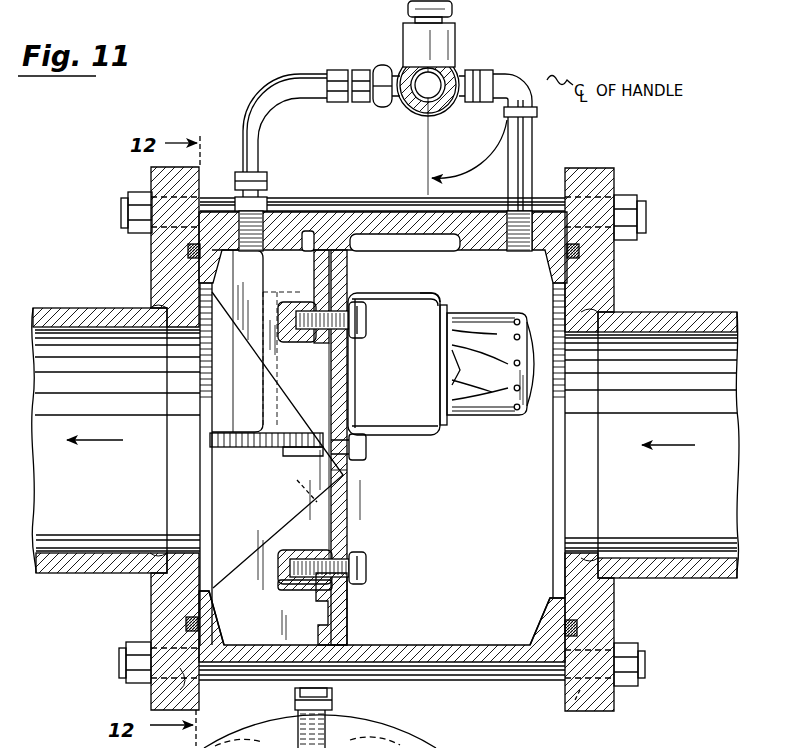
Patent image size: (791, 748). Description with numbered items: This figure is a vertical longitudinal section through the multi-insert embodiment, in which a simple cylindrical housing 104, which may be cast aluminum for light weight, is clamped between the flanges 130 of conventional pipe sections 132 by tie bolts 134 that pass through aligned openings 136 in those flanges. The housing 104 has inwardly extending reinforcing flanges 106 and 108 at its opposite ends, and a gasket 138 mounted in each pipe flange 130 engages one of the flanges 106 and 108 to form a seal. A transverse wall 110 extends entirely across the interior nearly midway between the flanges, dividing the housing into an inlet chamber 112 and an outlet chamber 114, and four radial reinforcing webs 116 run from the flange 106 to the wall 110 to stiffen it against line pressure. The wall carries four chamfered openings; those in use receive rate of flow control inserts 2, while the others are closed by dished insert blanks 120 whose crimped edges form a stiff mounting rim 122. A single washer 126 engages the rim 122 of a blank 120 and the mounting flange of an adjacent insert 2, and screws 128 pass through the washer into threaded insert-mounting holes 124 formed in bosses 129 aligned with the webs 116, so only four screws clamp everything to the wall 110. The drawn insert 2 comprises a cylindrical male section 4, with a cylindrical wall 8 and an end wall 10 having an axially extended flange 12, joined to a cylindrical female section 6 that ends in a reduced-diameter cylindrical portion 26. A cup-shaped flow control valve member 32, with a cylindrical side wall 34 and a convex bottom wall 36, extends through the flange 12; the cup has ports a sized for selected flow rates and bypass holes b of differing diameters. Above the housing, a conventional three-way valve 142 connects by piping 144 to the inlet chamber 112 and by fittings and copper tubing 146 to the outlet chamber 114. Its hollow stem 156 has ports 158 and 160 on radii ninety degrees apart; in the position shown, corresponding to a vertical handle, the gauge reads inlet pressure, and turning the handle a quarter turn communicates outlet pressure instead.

The rate of flow control insert 2 is at (394, 282).
The cylindrical male section 4 is at (404, 440).
The cylindrical female section 6 is at (288, 398).
The cylindrical wall 8 is at (303, 410).
The end wall 10 is at (448, 297).
The axially extended flange 12 is at (443, 422).
The reduced-diameter cylindrical portion 26 is at (250, 380).
The flow control valve member 32 is at (487, 309).
The cylindrical side wall 34 is at (484, 418).
The convex bottom wall 36 is at (535, 406).
The ports a is at (457, 312).
The bypass holes b is at (513, 337).
The cylindrical housing 104 is at (489, 670).
The reinforcing flange 106 is at (217, 627).
The reinforcing flange 108 is at (550, 608).
The transverse wall 110 is at (343, 620).
The inlet chamber 112 is at (493, 563).
The outlet chamber 114 is at (252, 505).
The radial reinforcing webs 116 is at (285, 271).
The insert blank 120 is at (307, 486).
The mounting rim 122 is at (350, 500).
The insert-mounting holes 124 is at (298, 588).
The washer 126 is at (351, 304).
The screws 128 is at (367, 322).
The bosses 129 is at (305, 302).
The pipe flanges 130 is at (150, 613).
The pipe sections 132 is at (70, 310).
The tie bolts 134 is at (127, 206).
The openings 136 is at (183, 676).
The gasket 138 is at (186, 628).
The 3-way valve 142 is at (453, 53).
The piping 144 is at (533, 145).
The copper tubing 146 is at (251, 96).
The hollow stem 156 is at (423, 93).
The port 158 is at (427, 52).
The port 160 is at (453, 108).